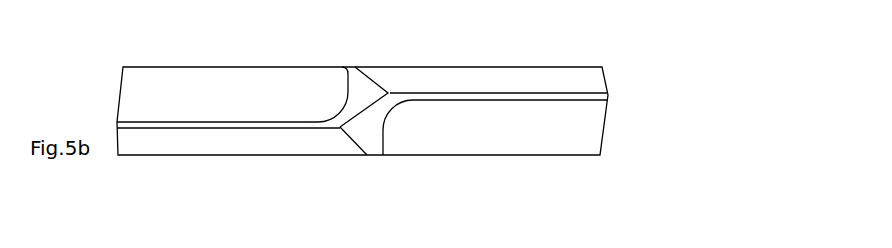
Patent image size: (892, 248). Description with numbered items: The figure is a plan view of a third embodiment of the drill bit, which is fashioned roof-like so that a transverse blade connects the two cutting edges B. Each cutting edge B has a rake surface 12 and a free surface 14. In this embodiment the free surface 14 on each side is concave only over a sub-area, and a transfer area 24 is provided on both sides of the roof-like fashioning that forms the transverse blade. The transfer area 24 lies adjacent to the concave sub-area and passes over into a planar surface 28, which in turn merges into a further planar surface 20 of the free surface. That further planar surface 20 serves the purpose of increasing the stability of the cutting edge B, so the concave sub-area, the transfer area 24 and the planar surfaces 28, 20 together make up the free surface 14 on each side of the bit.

The rake surface 12 is at (547, 76).
The free surface 14 is at (185, 88).
The release liner section 20 is at (577, 97).
The transfer area 24 is at (332, 93).
The planar surface 28 is at (372, 118).
The cutting edge B is at (473, 92).